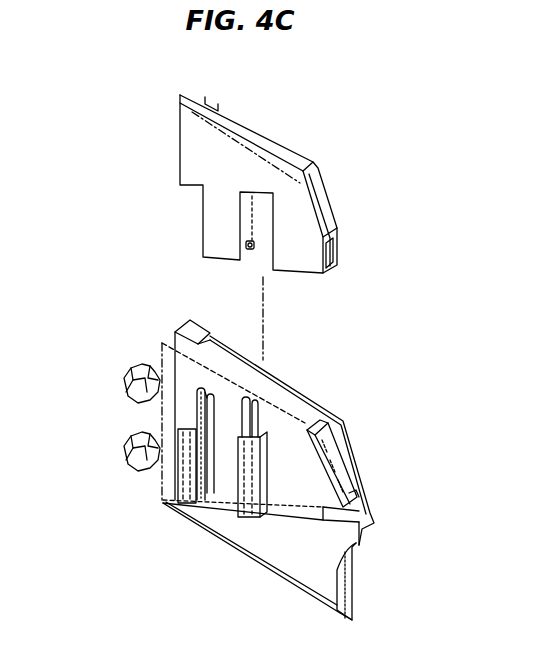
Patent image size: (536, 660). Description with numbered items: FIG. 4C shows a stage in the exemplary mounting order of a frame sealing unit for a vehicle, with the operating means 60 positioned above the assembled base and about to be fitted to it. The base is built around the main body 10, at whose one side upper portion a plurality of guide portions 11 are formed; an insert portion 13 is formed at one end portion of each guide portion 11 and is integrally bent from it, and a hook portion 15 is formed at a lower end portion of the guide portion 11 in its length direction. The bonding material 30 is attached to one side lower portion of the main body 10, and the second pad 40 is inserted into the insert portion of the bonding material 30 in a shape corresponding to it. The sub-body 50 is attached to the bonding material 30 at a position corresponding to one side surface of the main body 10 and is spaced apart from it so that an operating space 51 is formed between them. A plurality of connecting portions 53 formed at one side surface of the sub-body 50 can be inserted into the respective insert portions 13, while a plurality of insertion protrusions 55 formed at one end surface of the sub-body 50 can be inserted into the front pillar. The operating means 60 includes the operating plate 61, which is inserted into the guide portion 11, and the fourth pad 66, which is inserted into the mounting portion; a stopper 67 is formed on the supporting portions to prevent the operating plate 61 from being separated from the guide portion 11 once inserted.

The main body 10 is at (247, 453).
The guide portion 11 is at (297, 418).
The insert portion 13 is at (192, 428).
The hook portion 15 is at (372, 527).
The bonding material 30 is at (320, 572).
The second pad 40 is at (340, 450).
The sub-body 50 is at (300, 368).
The operating space 51 is at (240, 372).
The connecting portion 53 is at (170, 467).
The insertion protrusion 55 is at (122, 382).
The operating means 60 is at (207, 190).
The operating plate 61 is at (187, 147).
The fourth pad 66 is at (250, 133).
The stopper 67 is at (250, 250).